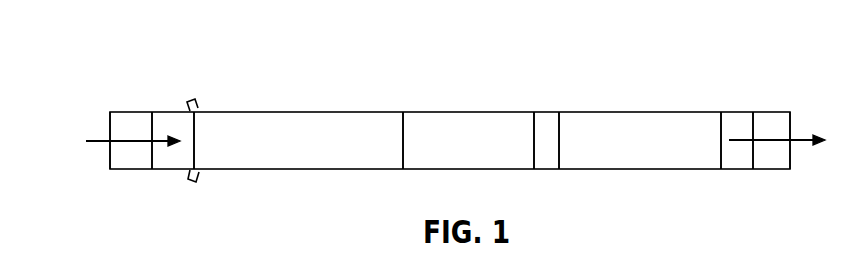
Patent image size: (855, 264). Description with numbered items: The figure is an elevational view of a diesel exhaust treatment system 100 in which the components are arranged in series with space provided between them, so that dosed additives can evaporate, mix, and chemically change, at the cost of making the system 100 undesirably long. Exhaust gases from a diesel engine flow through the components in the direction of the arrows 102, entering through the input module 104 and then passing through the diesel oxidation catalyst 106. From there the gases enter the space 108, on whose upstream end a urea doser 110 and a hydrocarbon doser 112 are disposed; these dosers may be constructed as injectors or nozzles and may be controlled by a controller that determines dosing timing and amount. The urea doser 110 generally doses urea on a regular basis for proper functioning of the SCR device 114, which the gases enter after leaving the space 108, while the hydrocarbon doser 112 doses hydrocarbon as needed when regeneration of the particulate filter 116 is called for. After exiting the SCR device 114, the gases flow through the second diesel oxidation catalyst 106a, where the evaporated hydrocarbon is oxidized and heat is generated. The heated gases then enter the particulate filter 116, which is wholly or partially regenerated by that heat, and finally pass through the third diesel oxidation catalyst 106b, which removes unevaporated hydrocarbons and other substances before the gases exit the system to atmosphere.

The diesel exhaust treatment system 100 is at (66, 100).
The arrows 102 is at (100, 143).
The input module 104 is at (133, 167).
The diesel oxidation catalyst 106 is at (172, 165).
The second diesel oxidation catalyst 106a is at (546, 122).
The third diesel oxidation catalyst 106b is at (738, 122).
The space 108 is at (297, 122).
The urea doser 110 is at (196, 105).
The hydrocarbon doser 112 is at (196, 176).
The SCR device 114 is at (452, 122).
The particulate filter 116 is at (640, 122).